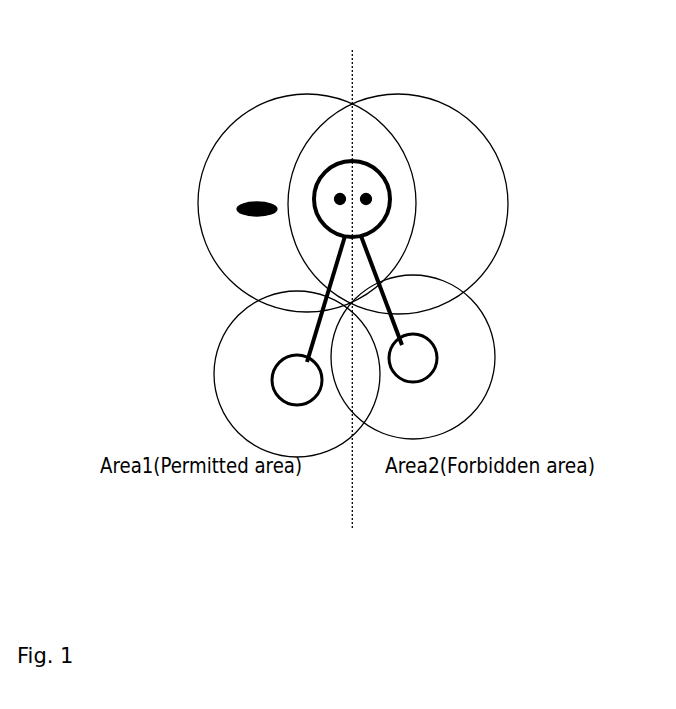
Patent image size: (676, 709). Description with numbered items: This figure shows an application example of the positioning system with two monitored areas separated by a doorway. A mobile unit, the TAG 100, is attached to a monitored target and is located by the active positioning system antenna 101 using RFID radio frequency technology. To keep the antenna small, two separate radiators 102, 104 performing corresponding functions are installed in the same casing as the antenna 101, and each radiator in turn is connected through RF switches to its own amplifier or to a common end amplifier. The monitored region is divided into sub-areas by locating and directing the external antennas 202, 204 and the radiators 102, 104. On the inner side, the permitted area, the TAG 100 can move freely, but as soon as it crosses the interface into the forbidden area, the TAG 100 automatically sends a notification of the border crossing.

The TAG 100 is at (240, 208).
The active positioning system antenna 101 is at (343, 159).
The radiator 102 is at (337, 193).
The radiator 104 is at (368, 193).
The external antenna 202 is at (273, 370).
The external antenna 204 is at (438, 353).